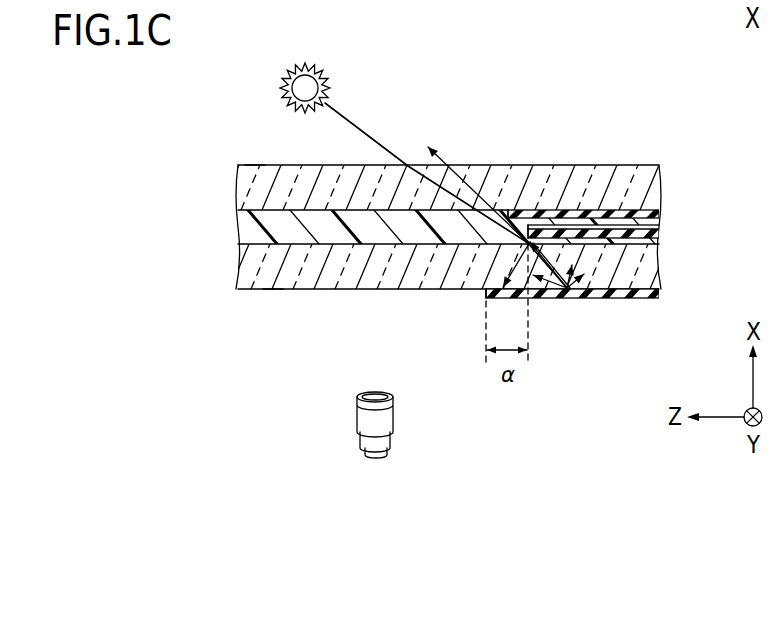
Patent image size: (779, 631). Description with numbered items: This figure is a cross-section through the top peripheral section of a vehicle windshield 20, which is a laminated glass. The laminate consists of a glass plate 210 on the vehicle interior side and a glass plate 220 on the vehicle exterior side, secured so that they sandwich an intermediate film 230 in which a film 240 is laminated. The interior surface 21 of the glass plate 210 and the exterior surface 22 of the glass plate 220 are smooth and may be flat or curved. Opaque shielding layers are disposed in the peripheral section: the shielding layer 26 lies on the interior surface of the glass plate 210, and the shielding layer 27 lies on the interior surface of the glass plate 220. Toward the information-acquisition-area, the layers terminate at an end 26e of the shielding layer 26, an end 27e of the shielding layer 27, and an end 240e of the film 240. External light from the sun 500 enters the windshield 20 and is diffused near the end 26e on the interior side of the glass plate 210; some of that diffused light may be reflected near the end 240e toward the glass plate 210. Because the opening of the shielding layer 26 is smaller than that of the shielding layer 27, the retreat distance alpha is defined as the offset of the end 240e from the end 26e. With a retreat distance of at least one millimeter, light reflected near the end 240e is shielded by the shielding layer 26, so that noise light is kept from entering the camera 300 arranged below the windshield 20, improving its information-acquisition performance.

The windshield 20 is at (250, 73).
The exterior surface 22 is at (256, 165).
The interior surface 21 is at (273, 290).
The intermediate film 230 is at (243, 228).
The glass plate 220 is at (652, 187).
The glass plate 210 is at (652, 266).
The film 240 is at (652, 232).
The shielding layer 27 is at (608, 212).
The end of shielding layer 27e is at (508, 212).
The end of film 240e is at (528, 228).
The shielding layer 26 is at (608, 293).
The end of shielding layer 26e is at (486, 293).
The sun 500 is at (327, 73).
The camera 300 is at (395, 418).